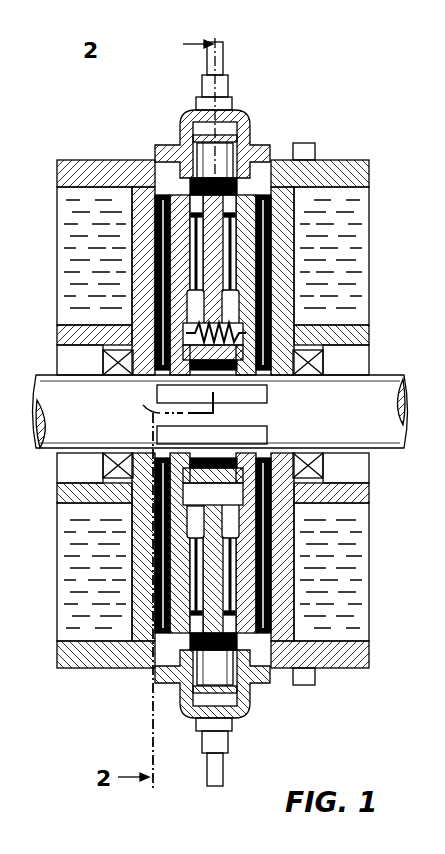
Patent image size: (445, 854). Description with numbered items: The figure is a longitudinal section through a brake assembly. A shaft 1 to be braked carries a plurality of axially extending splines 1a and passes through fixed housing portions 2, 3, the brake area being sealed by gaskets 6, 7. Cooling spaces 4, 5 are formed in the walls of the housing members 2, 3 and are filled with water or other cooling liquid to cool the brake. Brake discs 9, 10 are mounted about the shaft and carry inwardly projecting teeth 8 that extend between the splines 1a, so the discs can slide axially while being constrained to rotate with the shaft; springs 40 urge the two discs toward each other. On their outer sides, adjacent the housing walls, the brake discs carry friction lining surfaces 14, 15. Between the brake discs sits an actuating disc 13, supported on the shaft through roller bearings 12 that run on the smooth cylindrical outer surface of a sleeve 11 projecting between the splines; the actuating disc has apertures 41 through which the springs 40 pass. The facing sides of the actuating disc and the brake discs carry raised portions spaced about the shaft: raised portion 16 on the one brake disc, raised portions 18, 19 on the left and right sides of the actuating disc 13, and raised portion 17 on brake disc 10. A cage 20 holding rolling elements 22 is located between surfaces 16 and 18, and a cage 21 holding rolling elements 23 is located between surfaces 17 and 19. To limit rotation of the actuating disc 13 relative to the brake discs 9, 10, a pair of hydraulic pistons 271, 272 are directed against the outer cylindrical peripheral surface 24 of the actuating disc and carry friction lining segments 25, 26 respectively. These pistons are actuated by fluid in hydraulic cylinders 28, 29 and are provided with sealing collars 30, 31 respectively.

The shaft 1 is at (92, 410).
The axially extending splines 1a is at (158, 413).
The fixed housing portion 2 is at (145, 278).
The fixed housing portion 3 is at (282, 290).
The cooling space 4 is at (92, 242).
The cooling space 5 is at (355, 259).
The gasket 6 is at (115, 470).
The gasket 7 is at (312, 468).
The inwardly projecting teeth 8 is at (252, 389).
The brake disc 9 is at (180, 548).
The brake disc 10 is at (250, 563).
The sleeve 11 is at (295, 510).
The roller bearings 12 is at (160, 498).
The actuating disc 13 is at (195, 582).
The friction lining surface 14 is at (195, 598).
The friction lining surface 15 is at (272, 596).
The raised portion 16 is at (195, 240).
The raised portion 17 is at (250, 246).
The raised portion 18 is at (190, 186).
The raised portion 19 is at (275, 186).
The cage 20 is at (120, 652).
The cage 21 is at (340, 650).
The rolling elements 22 is at (150, 610).
The rolling elements 23 is at (290, 620).
The outer cylindrical peripheral surface 24 is at (220, 160).
The friction lining segment 25 is at (185, 152).
The friction lining segment 26 is at (180, 685).
The hydraulic piston 271 is at (237, 130).
The hydraulic piston 272 is at (210, 668).
The hydraulic cylinder 28 is at (185, 125).
The hydraulic cylinder 29 is at (175, 712).
The sealing collar 30 is at (232, 110).
The sealing collar 31 is at (240, 722).
The springs 40 is at (195, 314).
The apertures 41 is at (213, 270).